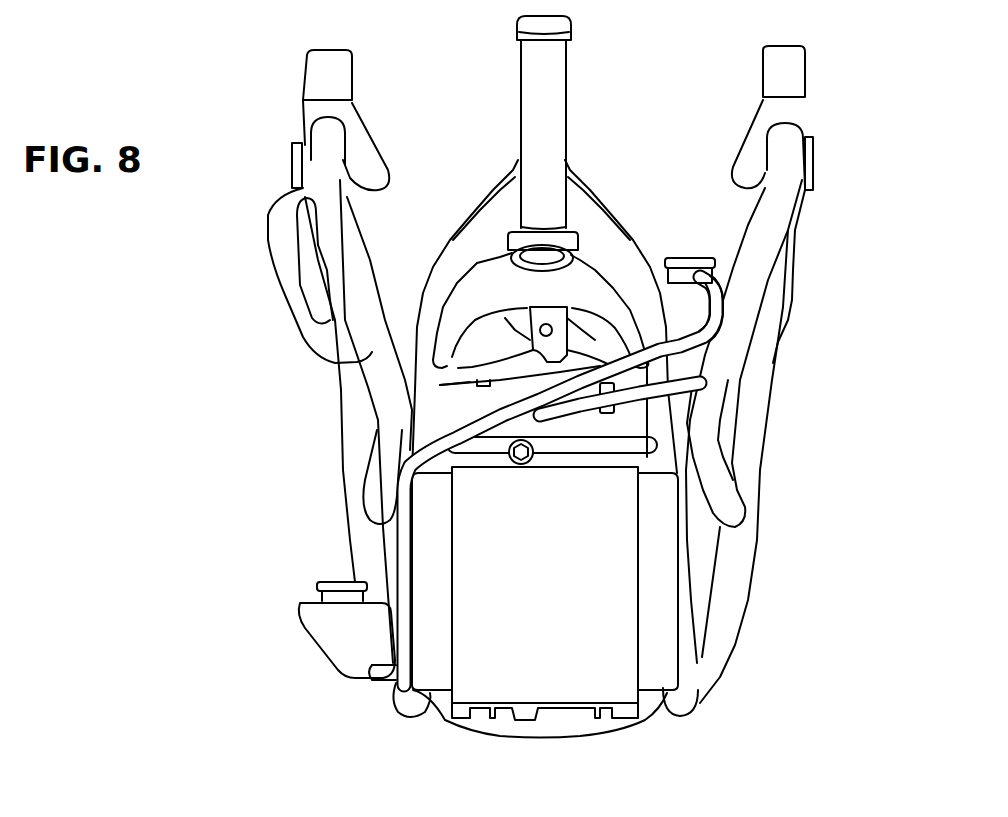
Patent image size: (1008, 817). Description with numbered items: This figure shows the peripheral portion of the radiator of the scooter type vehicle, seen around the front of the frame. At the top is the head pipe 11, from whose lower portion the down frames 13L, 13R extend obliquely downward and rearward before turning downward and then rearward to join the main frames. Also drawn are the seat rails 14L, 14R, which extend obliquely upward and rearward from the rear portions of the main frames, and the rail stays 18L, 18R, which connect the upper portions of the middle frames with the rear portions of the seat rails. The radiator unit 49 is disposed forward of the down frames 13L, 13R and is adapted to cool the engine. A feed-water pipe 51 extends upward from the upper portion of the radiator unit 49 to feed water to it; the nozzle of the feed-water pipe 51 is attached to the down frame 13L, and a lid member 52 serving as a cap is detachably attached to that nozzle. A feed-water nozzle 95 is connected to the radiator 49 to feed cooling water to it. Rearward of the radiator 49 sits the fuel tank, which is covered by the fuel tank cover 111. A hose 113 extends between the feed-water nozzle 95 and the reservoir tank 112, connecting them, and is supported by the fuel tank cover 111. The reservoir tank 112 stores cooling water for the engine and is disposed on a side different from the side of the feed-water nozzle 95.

The head pipe 11 is at (560, 78).
The lid member 52 is at (687, 258).
The feed-water nozzle 95 is at (713, 274).
The rail stay 18L is at (790, 310).
The down frame 13L is at (762, 356).
The seat rail 14L is at (718, 397).
The radiator unit 49 is at (598, 598).
The rail stay 18R is at (300, 252).
The seat rail 14R is at (372, 352).
The down frame 13R is at (347, 387).
The fuel tank cover 111 is at (440, 385).
The hose 113 is at (400, 434).
The feed-water pipe 51 is at (396, 458).
The reservoir tank 112 is at (305, 615).